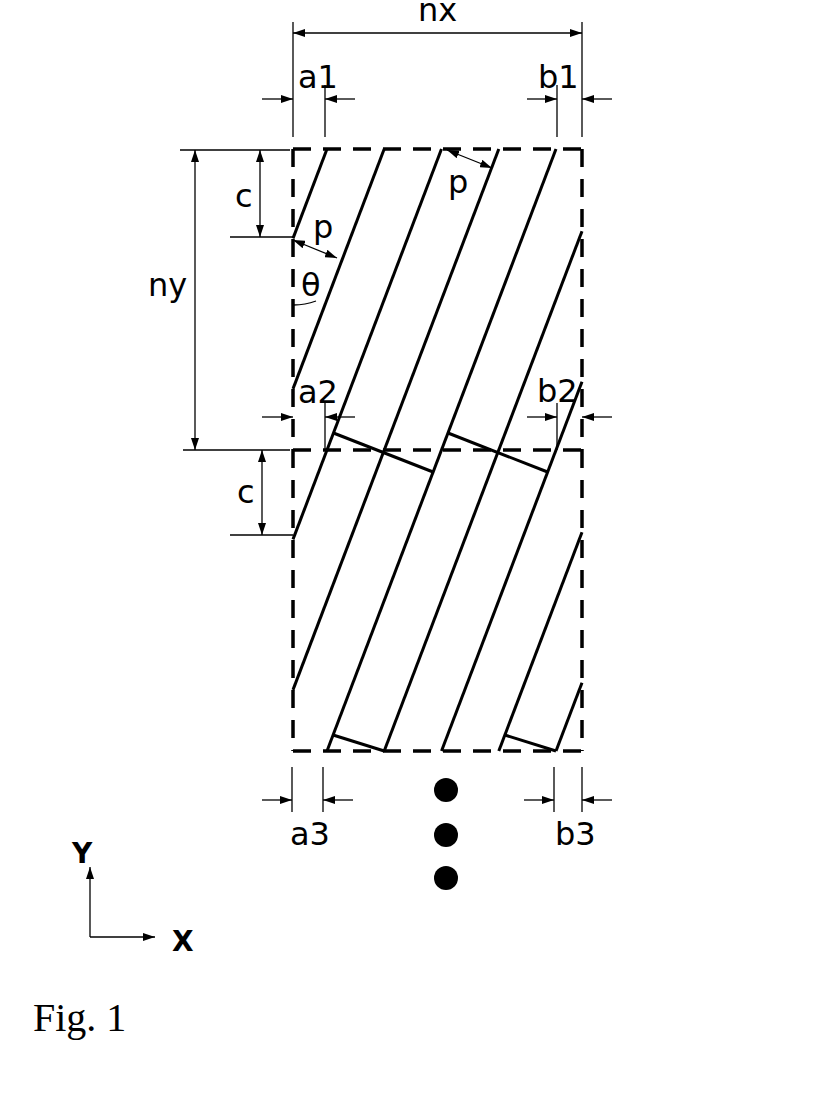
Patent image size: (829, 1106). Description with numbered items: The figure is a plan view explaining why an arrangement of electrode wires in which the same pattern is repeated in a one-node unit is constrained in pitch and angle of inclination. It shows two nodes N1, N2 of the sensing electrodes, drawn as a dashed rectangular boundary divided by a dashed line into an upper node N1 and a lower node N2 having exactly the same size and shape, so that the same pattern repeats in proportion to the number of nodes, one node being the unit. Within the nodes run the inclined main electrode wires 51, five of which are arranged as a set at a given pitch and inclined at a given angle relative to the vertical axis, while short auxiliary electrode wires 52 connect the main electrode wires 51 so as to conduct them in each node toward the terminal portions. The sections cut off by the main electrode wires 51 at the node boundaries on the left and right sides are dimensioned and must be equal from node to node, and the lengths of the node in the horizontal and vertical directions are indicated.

The main electrode wires 51 is at (512, 267).
The auxiliary electrode wires 52 is at (473, 435).
The node N1 is at (583, 182).
The node N2 is at (585, 510).